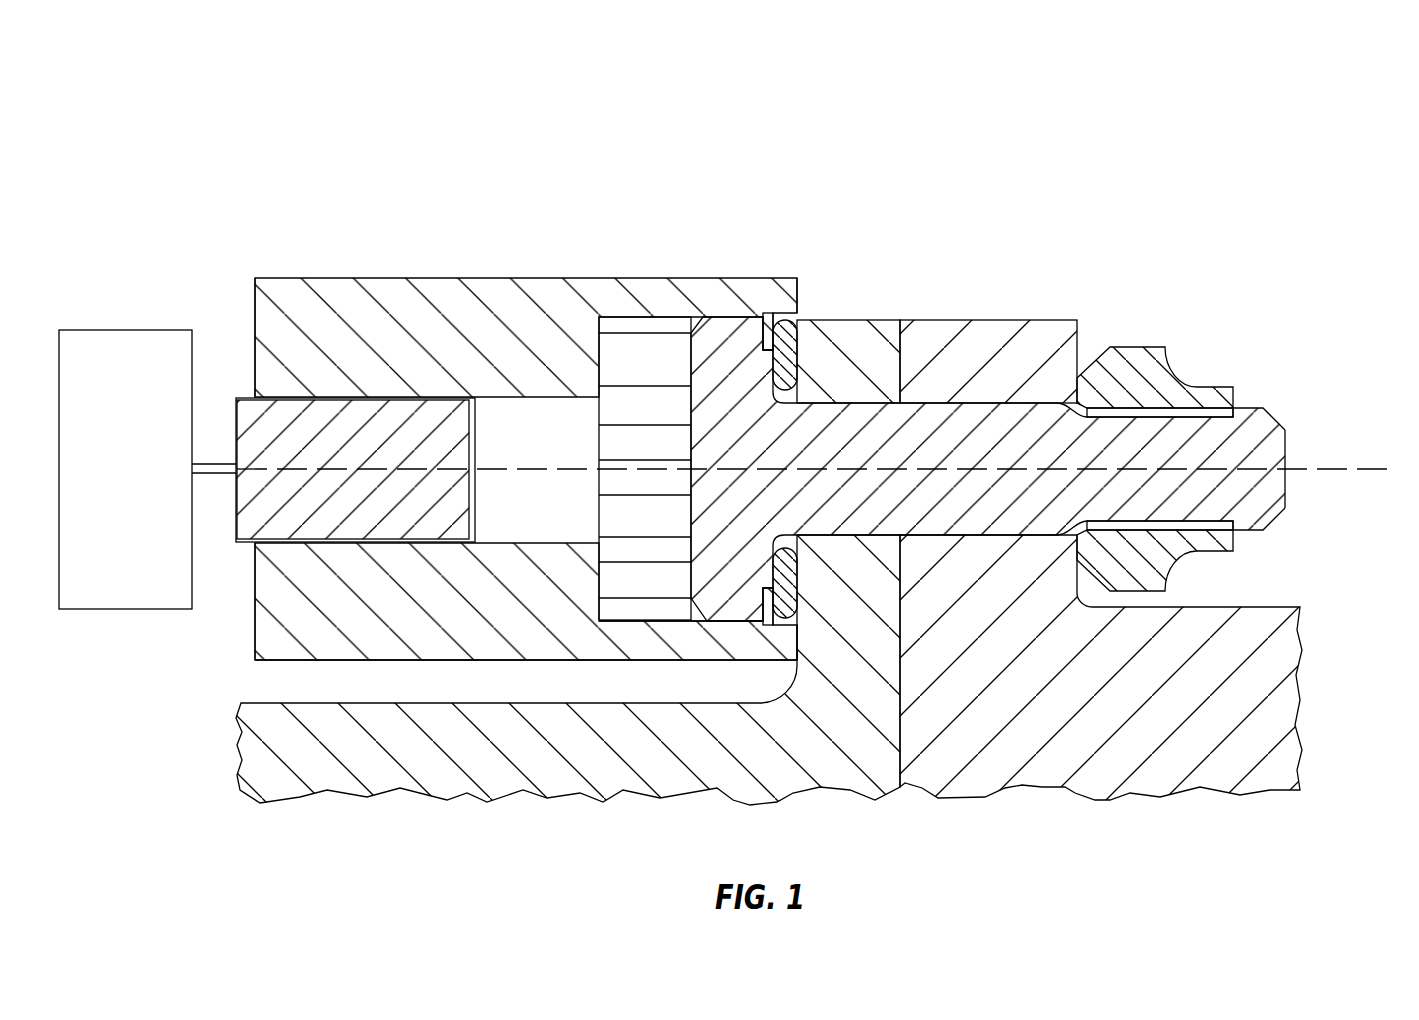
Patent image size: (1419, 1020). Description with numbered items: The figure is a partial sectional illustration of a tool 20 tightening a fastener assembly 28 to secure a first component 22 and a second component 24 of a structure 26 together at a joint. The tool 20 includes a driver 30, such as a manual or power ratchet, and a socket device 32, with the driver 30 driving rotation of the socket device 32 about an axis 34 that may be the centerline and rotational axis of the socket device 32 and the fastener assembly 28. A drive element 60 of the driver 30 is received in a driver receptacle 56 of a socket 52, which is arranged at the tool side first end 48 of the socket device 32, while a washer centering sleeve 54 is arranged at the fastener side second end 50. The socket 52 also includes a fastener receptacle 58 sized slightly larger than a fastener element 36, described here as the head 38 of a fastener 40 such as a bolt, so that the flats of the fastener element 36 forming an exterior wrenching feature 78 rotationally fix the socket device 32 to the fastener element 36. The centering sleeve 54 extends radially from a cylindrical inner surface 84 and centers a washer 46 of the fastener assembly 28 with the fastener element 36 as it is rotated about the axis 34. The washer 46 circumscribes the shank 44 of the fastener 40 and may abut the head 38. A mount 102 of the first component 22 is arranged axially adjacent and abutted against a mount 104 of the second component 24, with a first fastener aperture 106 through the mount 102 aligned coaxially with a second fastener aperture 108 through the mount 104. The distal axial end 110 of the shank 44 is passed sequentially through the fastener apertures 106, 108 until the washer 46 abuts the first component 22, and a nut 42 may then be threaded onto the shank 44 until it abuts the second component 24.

The tool 20 is at (157, 157).
The first component 22 is at (232, 775).
The second component 24 is at (1305, 770).
The structure 26 is at (1273, 240).
The fastener assembly 28 is at (1136, 300).
The driver 30 is at (115, 308).
The socket device 32 is at (506, 270).
The axis 34 is at (1388, 460).
The fastener element 36 is at (737, 315).
The head 38 is at (988, 469).
The fastener 40 is at (1282, 410).
The nut 42 is at (1175, 352).
The shank 44 is at (970, 403).
The washer 46 is at (800, 345).
The first end 48 is at (255, 291).
The second end 50 is at (797, 290).
The socket 52 is at (617, 667).
The washer centering sleeve 54 is at (778, 667).
The driver receptacle 56 is at (367, 400).
The fastener receptacle 58 is at (640, 325).
The drive element 60 is at (240, 397).
The wrenching feature 78 is at (719, 627).
The inner surface 84 is at (770, 313).
The mount 102 is at (877, 320).
The mount 104 is at (1038, 320).
The first fastener aperture 106 is at (845, 535).
The second fastener aperture 108 is at (960, 535).
The distal axial end 110 is at (1287, 492).